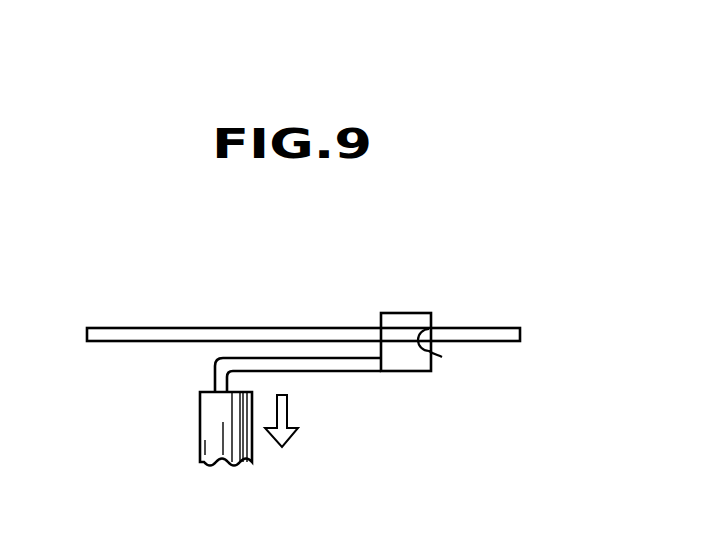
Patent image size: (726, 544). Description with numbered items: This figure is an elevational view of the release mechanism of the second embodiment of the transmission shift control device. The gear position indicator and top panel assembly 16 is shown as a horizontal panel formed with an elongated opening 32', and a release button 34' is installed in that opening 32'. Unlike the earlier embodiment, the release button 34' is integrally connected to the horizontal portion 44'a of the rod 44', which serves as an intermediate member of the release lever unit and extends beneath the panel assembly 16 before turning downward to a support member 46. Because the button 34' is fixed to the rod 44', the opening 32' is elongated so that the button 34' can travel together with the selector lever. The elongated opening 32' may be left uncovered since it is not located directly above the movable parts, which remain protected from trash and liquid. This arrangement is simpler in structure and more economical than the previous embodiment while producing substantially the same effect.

The gear position indicator and top panel assembly 16 is at (186, 328).
The release button 34' is at (436, 300).
The elongated opening 32' is at (473, 367).
The rod 44' is at (164, 375).
The horizontal portion of the rod 44'a is at (327, 413).
The support member 46 is at (214, 438).